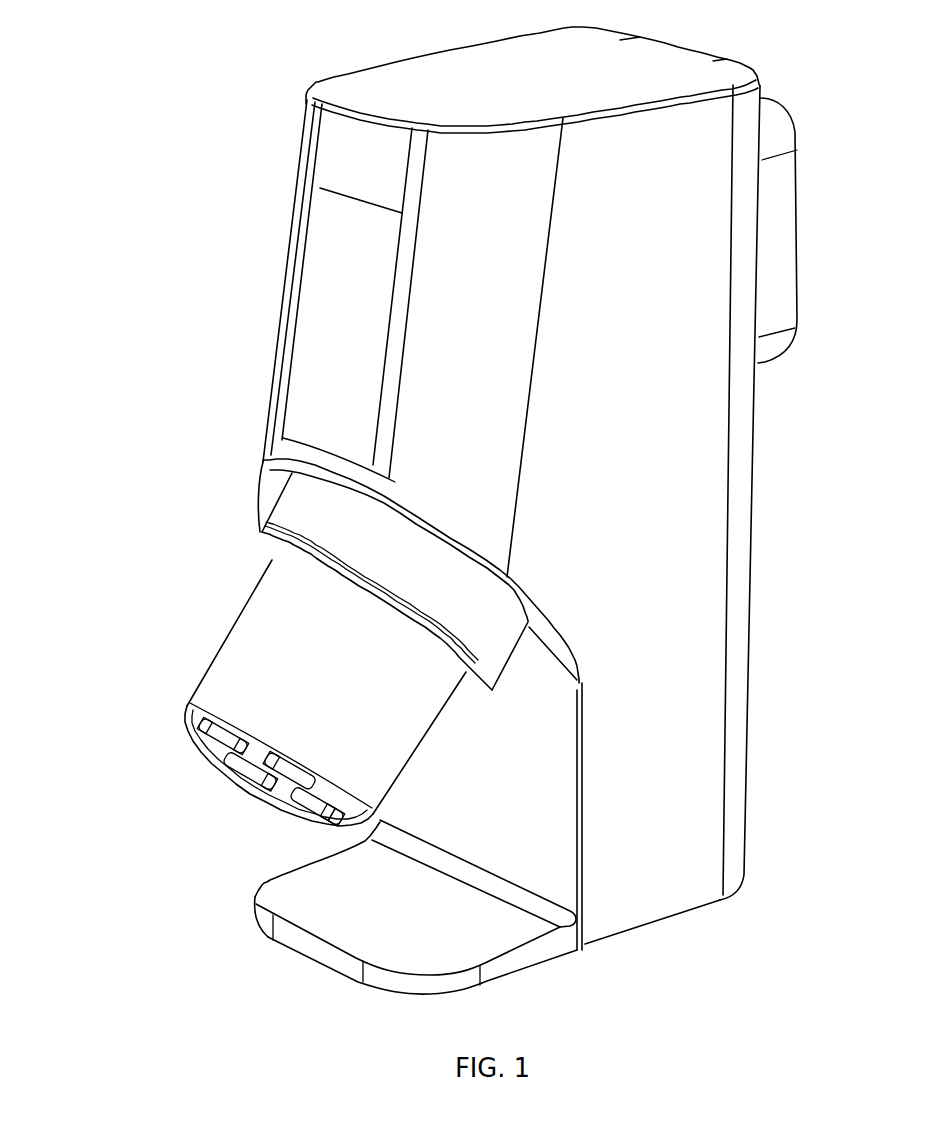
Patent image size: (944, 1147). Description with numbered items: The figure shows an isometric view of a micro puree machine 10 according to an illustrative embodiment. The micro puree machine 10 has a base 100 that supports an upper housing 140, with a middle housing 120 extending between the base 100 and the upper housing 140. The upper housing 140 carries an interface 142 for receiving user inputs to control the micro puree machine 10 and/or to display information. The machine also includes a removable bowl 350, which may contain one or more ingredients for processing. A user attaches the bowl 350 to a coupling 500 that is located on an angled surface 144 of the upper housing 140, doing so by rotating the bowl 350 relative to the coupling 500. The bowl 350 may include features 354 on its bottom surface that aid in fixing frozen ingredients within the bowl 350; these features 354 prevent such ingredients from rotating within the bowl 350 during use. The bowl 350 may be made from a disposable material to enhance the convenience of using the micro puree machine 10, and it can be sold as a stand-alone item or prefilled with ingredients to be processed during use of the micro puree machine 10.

The micro puree machine 10 is at (103, 117).
The base 100 is at (297, 906).
The middle housing 120 is at (683, 704).
The upper housing 140 is at (717, 241).
The interface 142 is at (305, 362).
The angled surface 144 is at (263, 460).
The bowl 350 is at (270, 622).
The features 354 is at (275, 773).
The coupling 500 is at (285, 525).